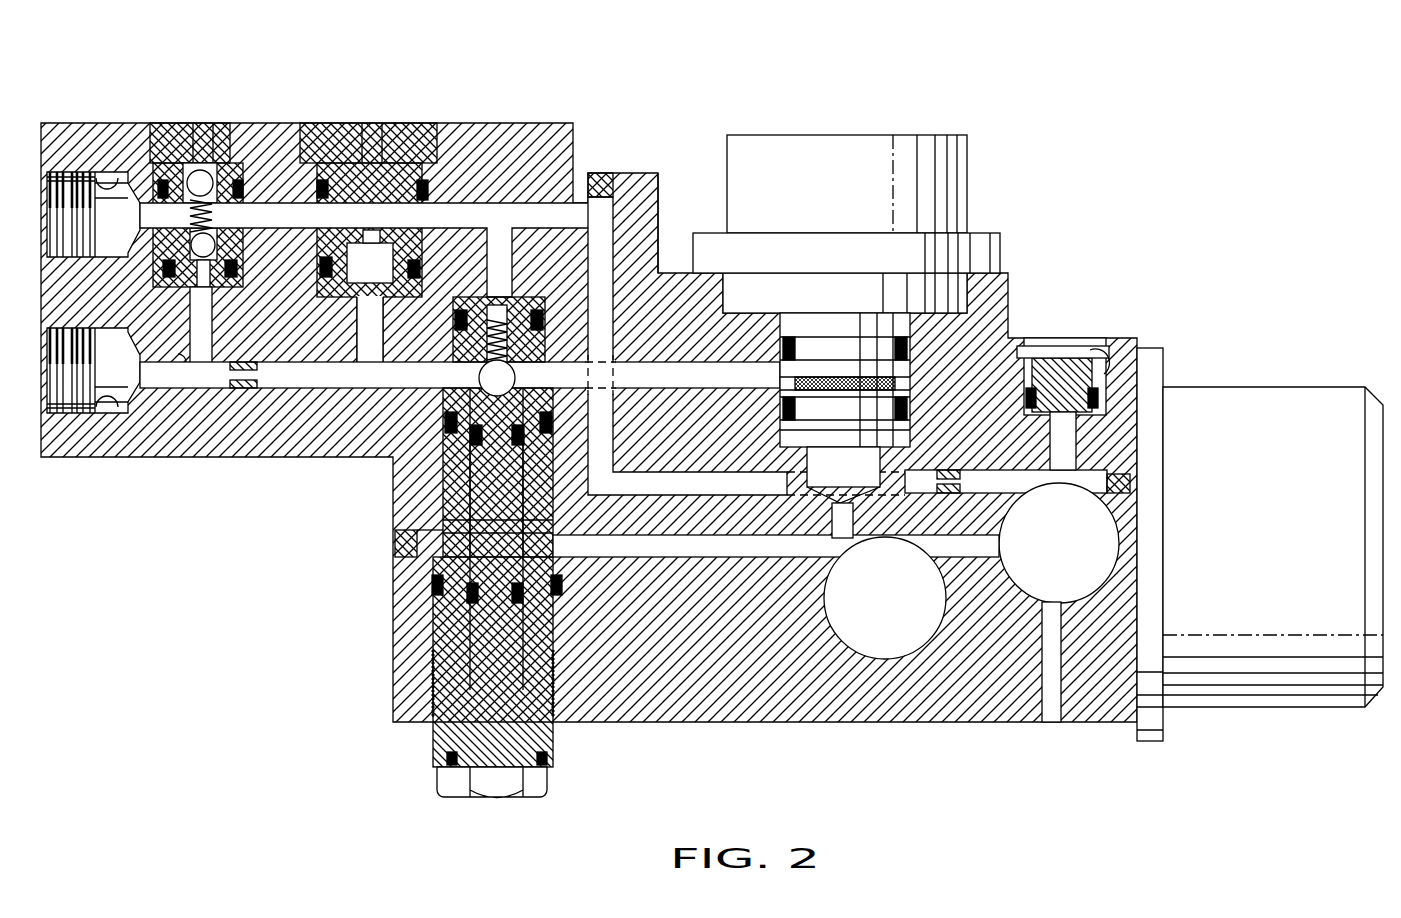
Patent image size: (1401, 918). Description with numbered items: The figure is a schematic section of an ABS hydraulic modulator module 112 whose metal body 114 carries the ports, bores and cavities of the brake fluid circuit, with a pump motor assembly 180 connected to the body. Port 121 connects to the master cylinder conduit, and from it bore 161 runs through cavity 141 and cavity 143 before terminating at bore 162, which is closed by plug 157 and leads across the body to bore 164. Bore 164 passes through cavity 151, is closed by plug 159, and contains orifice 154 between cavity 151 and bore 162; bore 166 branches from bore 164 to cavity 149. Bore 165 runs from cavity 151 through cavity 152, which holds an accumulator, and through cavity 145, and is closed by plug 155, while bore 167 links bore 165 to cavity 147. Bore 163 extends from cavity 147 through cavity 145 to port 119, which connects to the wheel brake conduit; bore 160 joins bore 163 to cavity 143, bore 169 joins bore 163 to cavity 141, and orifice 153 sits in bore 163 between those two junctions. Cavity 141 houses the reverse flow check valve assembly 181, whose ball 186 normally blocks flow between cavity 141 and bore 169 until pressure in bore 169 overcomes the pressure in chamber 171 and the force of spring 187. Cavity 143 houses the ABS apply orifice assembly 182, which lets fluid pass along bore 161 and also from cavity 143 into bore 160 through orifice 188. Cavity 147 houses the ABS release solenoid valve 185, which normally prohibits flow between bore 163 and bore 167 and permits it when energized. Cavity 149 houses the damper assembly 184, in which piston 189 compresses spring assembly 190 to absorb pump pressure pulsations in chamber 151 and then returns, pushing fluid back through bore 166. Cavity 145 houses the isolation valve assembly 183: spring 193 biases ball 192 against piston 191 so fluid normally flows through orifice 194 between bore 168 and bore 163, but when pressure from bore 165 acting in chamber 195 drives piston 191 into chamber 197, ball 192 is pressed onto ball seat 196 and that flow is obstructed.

The module 112 is at (1030, 230).
The body 114 is at (752, 728).
The port 119 is at (110, 413).
The port 121 is at (100, 172).
The cavity 141 is at (240, 195).
The cavity 143 is at (420, 180).
The cavity 145 is at (443, 505).
The cavity 147 is at (785, 327).
The cavity 149 is at (1100, 372).
The cavity 151 is at (1058, 604).
The cavity 152 is at (862, 659).
The orifice 153 is at (260, 388).
The orifice 154 is at (1015, 522).
The plug 155 is at (400, 548).
The plug 157 is at (600, 180).
The plug 159 is at (1140, 478).
The bore 160 is at (350, 378).
The bore 161 is at (438, 262).
The bore 162 is at (658, 238).
The bore 163 is at (210, 378).
The bore 164 is at (783, 549).
The bore 165 is at (596, 557).
The bore 166 is at (1122, 483).
The bore 167 is at (845, 522).
The bore 168 is at (495, 300).
The bore 169 is at (173, 385).
The chamber 171 is at (213, 178).
The pump motor assembly 180 is at (1240, 680).
The reverse flow check valve assembly 181 is at (178, 115).
The ABS apply orifice assembly 182 is at (338, 115).
The isolation valve assembly 183 is at (425, 752).
The damper assembly 184 is at (1065, 330).
The ABS release solenoid valve 185 is at (838, 145).
The ball 186 is at (218, 243).
The spring 187 is at (165, 182).
The orifice 188 is at (372, 243).
The piston 189 is at (1100, 365).
The spring assembly 190 is at (1085, 348).
The piston 191 is at (432, 578).
The ball 192 is at (515, 372).
The spring 193 is at (520, 362).
The orifice 194 is at (540, 312).
The chamber 195 is at (440, 598).
The ball seat 196 is at (447, 430).
The chamber 197 is at (470, 445).